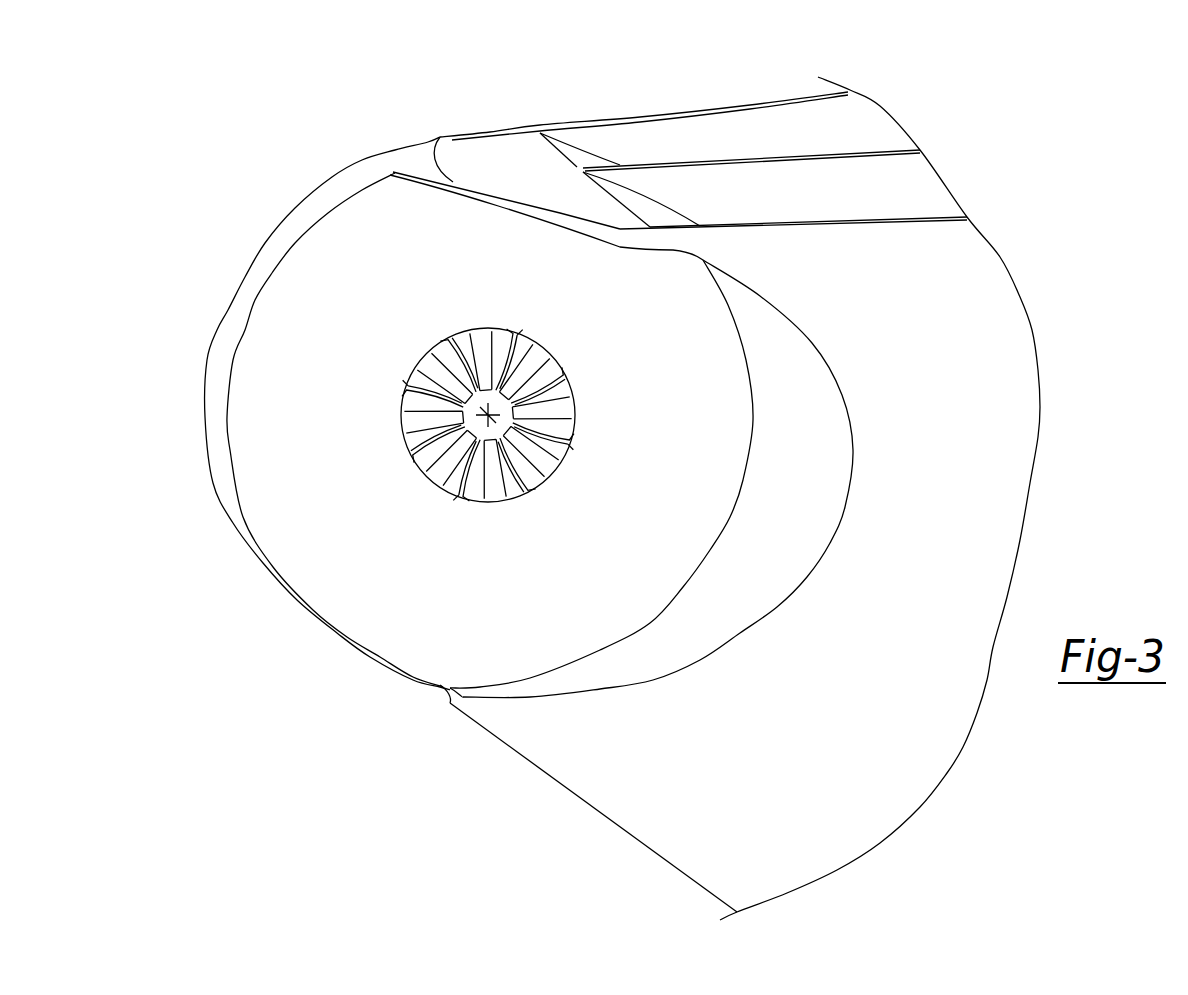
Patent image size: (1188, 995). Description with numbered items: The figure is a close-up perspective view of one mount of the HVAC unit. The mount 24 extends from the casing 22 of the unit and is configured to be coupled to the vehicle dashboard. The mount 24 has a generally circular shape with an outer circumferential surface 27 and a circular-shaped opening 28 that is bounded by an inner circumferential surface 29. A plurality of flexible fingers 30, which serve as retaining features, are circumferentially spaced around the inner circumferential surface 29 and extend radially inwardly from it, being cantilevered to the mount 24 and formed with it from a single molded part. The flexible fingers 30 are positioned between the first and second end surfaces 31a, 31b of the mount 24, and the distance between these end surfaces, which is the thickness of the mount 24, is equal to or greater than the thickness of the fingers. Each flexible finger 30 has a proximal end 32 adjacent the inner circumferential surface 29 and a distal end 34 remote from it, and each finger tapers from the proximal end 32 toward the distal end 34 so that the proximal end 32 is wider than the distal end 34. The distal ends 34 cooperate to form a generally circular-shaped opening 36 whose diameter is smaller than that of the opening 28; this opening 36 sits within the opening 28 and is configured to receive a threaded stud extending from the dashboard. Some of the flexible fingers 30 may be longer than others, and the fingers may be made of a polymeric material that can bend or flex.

The casing 22 is at (960, 278).
The mount 24 is at (326, 389).
The outer circumferential surface 27 is at (245, 300).
The circular-shaped opening 28 is at (485, 428).
The inner circumferential surface 29 is at (523, 490).
The flexible fingers 30 is at (483, 348).
The first end surface 31a is at (272, 528).
The second end surface 31b is at (332, 177).
The proximal end 32 is at (440, 355).
The distal end 34 is at (438, 356).
The circular-shaped opening 36 is at (470, 412).